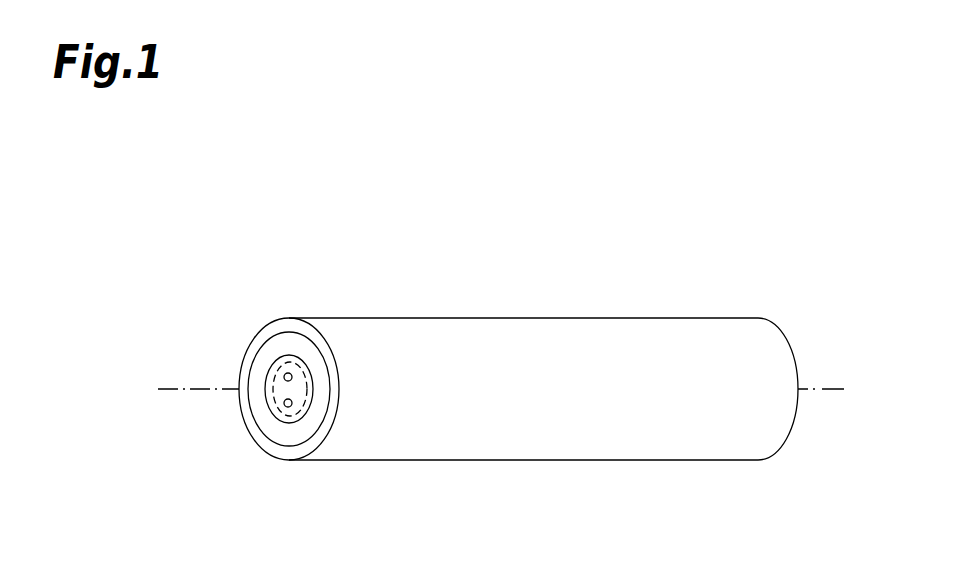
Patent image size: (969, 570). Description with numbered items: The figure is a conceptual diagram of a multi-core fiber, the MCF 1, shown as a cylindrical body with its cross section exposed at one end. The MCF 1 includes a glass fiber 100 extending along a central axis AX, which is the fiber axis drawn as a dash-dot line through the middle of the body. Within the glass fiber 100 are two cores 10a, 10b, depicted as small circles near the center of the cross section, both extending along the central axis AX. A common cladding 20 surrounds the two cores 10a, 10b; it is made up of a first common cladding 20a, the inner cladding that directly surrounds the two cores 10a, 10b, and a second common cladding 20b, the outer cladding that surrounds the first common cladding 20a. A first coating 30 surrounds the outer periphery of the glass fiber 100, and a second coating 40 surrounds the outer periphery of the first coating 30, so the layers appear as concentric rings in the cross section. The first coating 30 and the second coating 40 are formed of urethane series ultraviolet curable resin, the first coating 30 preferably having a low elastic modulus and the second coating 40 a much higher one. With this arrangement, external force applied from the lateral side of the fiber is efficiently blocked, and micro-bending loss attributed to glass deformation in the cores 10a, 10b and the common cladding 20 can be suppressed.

The MCF 1 is at (590, 296).
The central axis AX is at (482, 390).
The core 10a is at (284, 374).
The core 10b is at (284, 400).
The common cladding 20 is at (430, 240).
The first common cladding 20a is at (311, 376).
The second common cladding 20b is at (306, 383).
The first coating 30 is at (275, 443).
The second coating 40 is at (283, 457).
The glass fiber 100 is at (307, 420).